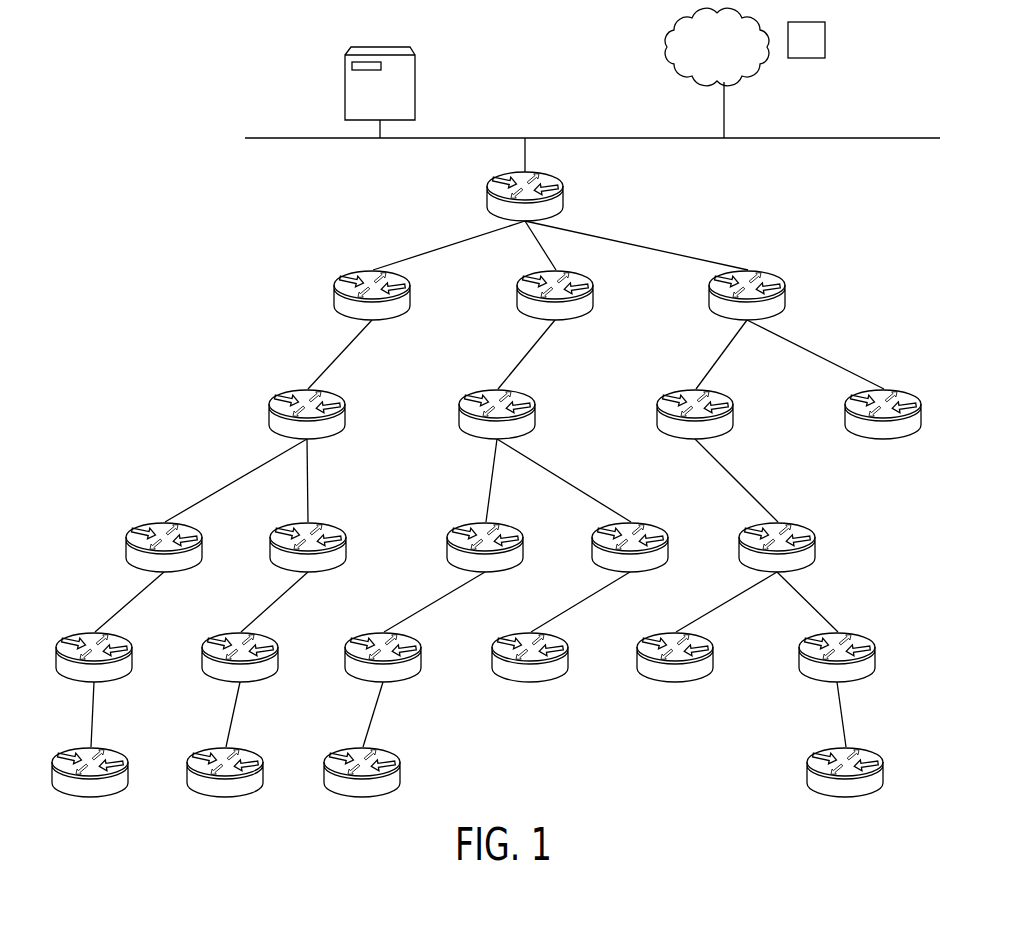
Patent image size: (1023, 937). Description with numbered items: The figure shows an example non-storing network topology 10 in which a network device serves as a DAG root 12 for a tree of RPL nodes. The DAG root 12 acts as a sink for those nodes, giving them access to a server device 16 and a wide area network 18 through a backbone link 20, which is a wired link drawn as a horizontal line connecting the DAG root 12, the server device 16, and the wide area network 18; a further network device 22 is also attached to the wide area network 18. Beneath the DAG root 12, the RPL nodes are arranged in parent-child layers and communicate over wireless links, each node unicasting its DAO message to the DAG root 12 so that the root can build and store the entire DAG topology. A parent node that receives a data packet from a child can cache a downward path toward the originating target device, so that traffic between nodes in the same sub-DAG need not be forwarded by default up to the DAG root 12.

The non-storing network topology 10 is at (884, 250).
The DAG root 12 is at (562, 197).
The server device 16 is at (415, 77).
The wide area network 18 is at (717, 73).
The backbone link 20 is at (812, 137).
The network device 22 is at (756, 50).